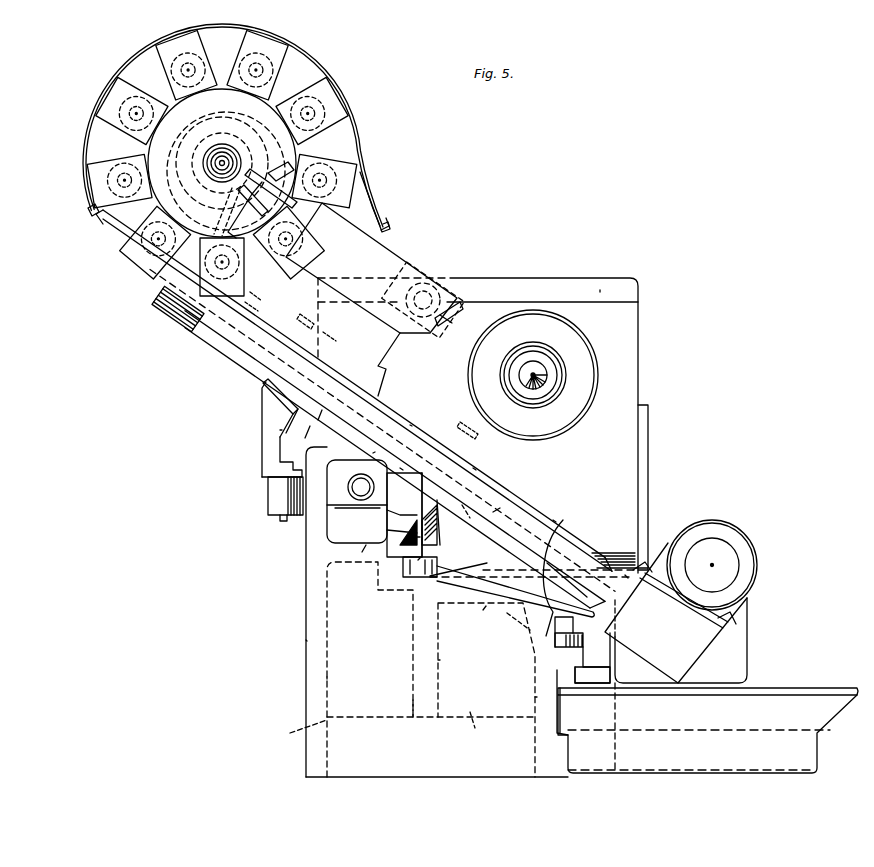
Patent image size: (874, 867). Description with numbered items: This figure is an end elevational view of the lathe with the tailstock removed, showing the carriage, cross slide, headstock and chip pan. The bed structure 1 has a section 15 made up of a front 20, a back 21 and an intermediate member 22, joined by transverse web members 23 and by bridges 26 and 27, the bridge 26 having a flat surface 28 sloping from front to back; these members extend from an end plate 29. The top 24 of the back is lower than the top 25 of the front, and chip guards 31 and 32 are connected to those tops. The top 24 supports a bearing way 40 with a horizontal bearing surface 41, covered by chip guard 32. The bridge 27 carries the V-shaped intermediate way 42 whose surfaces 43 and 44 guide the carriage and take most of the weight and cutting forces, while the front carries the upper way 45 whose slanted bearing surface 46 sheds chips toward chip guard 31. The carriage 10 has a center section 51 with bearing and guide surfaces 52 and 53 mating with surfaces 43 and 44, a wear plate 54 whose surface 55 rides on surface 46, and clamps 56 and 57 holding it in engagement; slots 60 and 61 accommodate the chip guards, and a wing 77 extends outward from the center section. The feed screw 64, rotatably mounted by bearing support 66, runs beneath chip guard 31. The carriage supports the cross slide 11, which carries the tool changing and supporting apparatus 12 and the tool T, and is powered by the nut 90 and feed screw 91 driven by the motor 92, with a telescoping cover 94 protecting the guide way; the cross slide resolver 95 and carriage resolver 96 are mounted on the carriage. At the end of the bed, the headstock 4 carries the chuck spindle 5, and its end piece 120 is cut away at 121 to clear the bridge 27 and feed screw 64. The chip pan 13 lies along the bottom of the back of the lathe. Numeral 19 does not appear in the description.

The bed structure 1 is at (298, 644).
The headstock 4 is at (639, 352).
The chuck spindle 5 is at (546, 378).
The carriage 10 is at (235, 356).
The cross slide 11 is at (410, 423).
The tool changing and supporting apparatus 12 is at (397, 255).
The chip pan 13 is at (760, 688).
The bed section 15 is at (326, 607).
The motor housing 19 is at (625, 575).
The front 20 is at (319, 681).
The back 21 is at (534, 697).
The intermediate member 22 is at (410, 703).
The transverse web members 23 is at (375, 728).
The top of the back 24 is at (533, 622).
The top of the front 25 is at (280, 430).
The bridge 26 is at (484, 609).
The bridge 27 is at (362, 552).
The flat surface 28 is at (480, 593).
The end plate 29 is at (489, 670).
The chip guard 31 is at (400, 468).
The chip guard 32 is at (588, 570).
The bearing way 40 is at (560, 640).
The bearing surface 41 is at (571, 636).
The V-shaped intermediate way 42 is at (408, 537).
The guiding and bearing surface 43 is at (398, 518).
The guiding and bearing surface 44 is at (438, 545).
The way 45 is at (290, 418).
The bearing surface 46 is at (320, 418).
The center section 51 is at (415, 522).
The bearing and guide surface 52 is at (410, 533).
The bearing and guide surface 53 is at (417, 539).
The wear plate 54 is at (266, 383).
The surface 55 is at (310, 426).
The clamp 56 is at (420, 560).
The clamp 57 is at (593, 678).
The slot 60 is at (556, 545).
The slot 61 is at (373, 453).
The feed screw 64 is at (356, 492).
The bearing support 66 is at (340, 520).
The wing 77 is at (459, 503).
The nut 90 is at (504, 513).
The feed screw 91 is at (553, 520).
The motor 92 is at (728, 558).
The telescoping cover 94 is at (473, 468).
The cross slide resolver 95 is at (165, 313).
The carriage resolver 96 is at (268, 495).
The end piece 120 is at (604, 442).
The cutaway 121 is at (423, 568).
The tool T is at (447, 320).